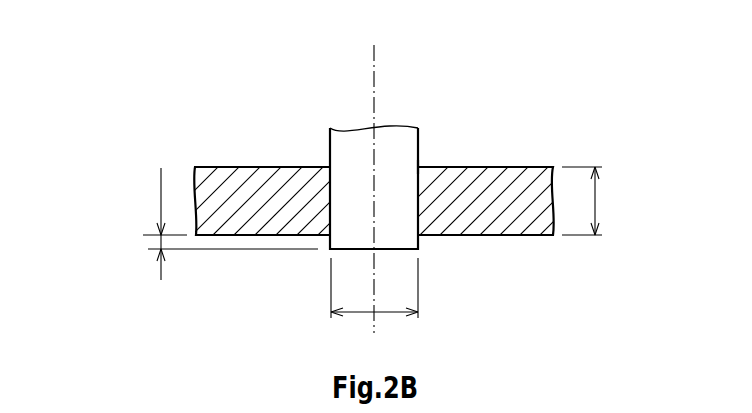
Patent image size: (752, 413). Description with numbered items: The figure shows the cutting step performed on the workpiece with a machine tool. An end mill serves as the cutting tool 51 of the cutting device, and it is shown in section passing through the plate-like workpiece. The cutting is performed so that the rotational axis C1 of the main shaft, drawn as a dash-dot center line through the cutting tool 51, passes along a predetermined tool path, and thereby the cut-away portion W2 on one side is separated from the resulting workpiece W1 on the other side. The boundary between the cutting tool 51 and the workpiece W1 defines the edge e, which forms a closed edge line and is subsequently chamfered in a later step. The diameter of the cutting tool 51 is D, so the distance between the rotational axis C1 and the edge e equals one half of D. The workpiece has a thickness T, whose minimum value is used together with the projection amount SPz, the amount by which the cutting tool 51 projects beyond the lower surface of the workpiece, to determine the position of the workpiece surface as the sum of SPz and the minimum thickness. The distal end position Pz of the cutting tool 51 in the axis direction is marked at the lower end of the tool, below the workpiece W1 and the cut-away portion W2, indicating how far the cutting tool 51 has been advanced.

The cutting tool 51 is at (388, 137).
The workpiece W1 is at (515, 167).
The cut-away portion W2 is at (235, 167).
The edge e is at (420, 167).
The rotational axis C1 is at (372, 65).
The thickness T is at (590, 201).
The diameter D is at (374, 288).
The projection amount SPz is at (149, 224).
The distal end position Pz is at (145, 249).